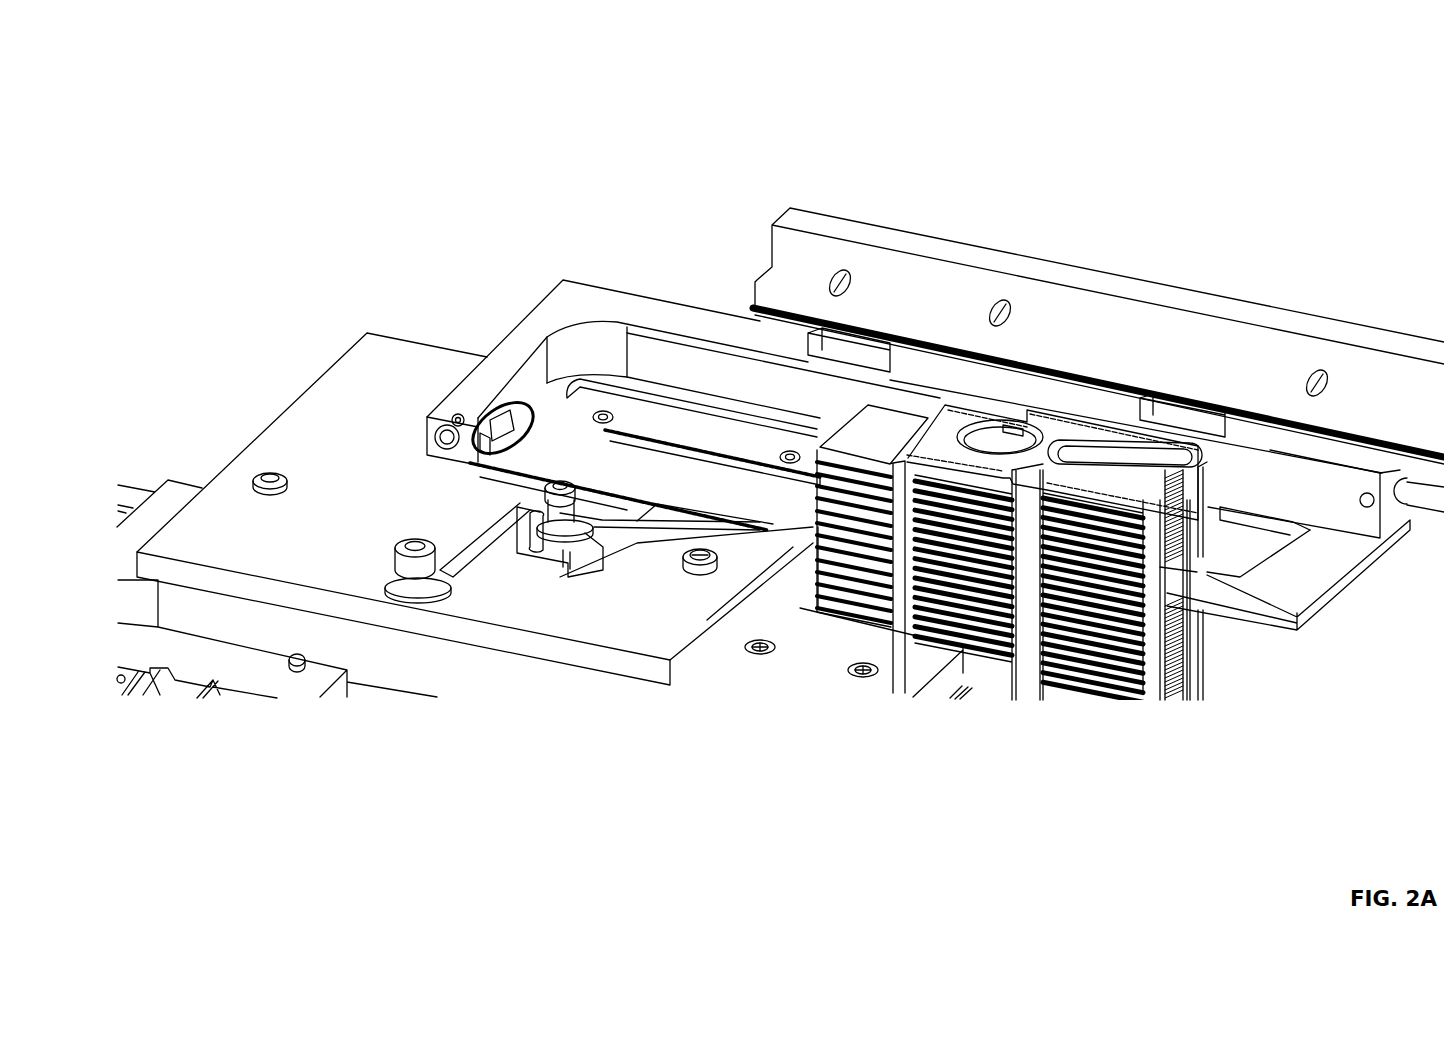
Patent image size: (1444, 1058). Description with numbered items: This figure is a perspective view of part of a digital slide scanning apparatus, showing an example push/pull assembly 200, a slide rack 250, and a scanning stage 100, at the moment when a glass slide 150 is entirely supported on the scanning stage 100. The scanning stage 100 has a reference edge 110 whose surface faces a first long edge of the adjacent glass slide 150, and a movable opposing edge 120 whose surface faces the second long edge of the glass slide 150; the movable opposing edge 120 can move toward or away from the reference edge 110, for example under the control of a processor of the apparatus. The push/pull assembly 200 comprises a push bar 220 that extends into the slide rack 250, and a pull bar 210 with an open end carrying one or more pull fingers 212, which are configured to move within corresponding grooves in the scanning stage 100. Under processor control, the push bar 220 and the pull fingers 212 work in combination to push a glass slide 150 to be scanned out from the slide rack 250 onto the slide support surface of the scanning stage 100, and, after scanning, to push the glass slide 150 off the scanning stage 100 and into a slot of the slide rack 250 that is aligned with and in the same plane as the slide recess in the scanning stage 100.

The scanning stage 100 is at (348, 398).
The reference edge 110 is at (713, 445).
The movable opposing edge 120 is at (668, 515).
The glass slide 150 is at (747, 490).
The push/pull assembly 200 is at (1042, 315).
The pull bar 210 is at (583, 302).
The pull fingers 212 is at (513, 400).
The push bar 220 is at (1262, 595).
The slide rack 250 is at (1033, 667).